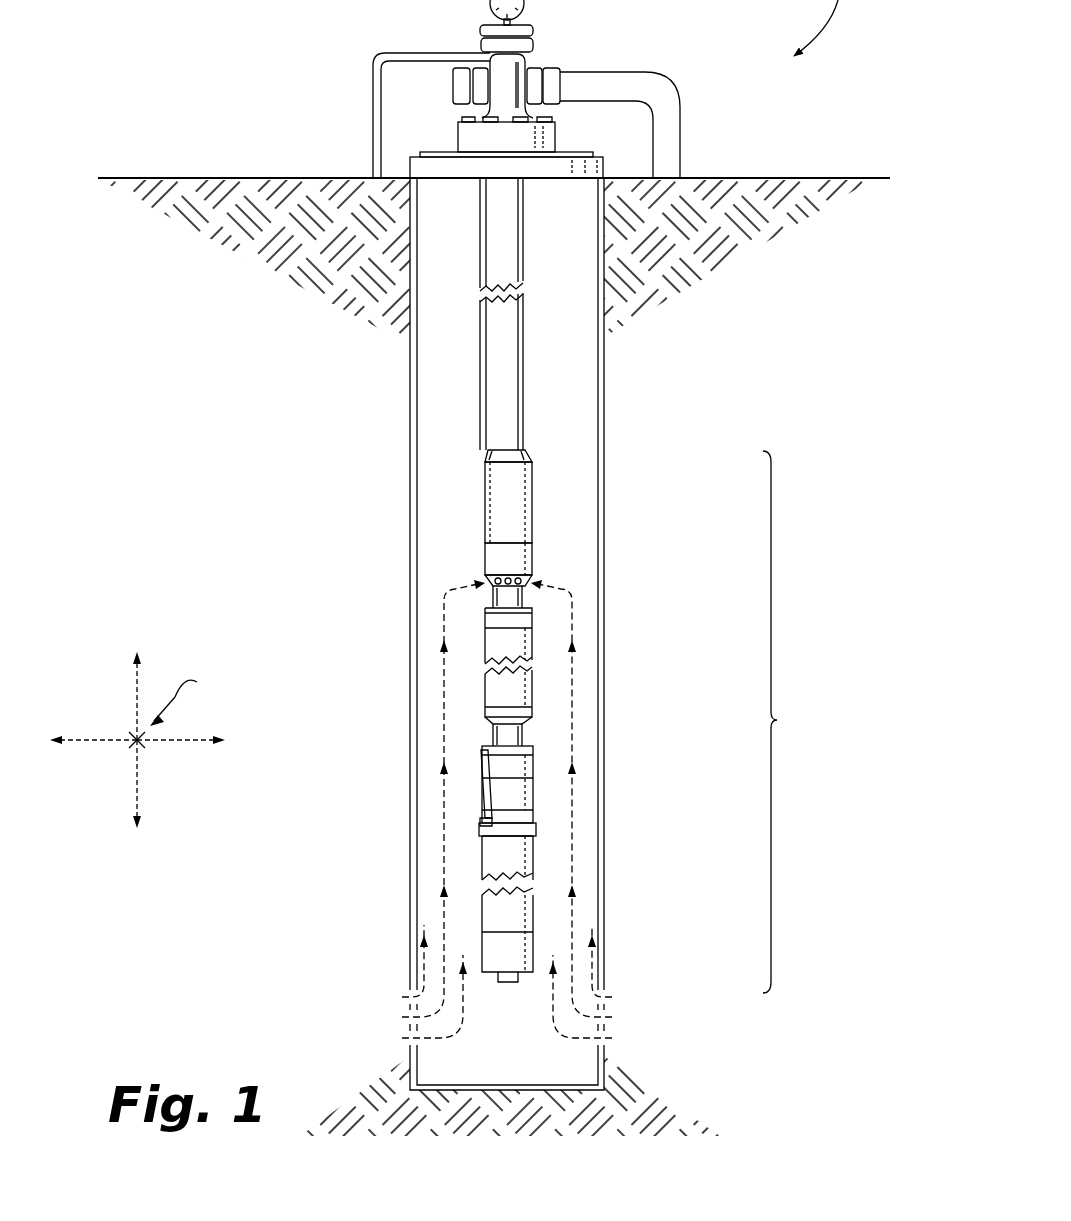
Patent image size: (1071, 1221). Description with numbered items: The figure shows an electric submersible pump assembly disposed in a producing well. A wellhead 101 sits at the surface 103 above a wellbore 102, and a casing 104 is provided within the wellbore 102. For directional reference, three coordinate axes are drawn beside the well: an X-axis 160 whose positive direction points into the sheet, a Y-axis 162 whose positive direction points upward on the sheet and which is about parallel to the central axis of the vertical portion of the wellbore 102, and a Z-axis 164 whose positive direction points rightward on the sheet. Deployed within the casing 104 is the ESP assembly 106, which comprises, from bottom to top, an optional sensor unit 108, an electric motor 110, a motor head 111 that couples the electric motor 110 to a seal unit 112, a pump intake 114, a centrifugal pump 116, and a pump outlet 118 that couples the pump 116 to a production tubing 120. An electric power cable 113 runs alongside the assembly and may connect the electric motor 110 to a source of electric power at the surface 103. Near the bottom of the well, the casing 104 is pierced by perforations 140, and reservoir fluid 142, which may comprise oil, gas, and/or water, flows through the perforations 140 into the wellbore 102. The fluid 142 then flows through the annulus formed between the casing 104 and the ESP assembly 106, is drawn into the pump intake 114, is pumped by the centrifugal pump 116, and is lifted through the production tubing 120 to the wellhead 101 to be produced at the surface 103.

The wellhead 101 is at (524, 8).
The wellbore 102 is at (558, 243).
The surface 103 is at (229, 178).
The casing 104 is at (605, 358).
The electric submersible pump (ESP) assembly 106 is at (786, 722).
The sensor unit 108 is at (505, 984).
The electric motor 110 is at (510, 864).
The motor head 111 is at (512, 790).
The seal unit 112 is at (512, 697).
The electric power cable 113 is at (484, 795).
The pump intake 114 is at (508, 557).
The centrifugal pump 116 is at (505, 502).
The pump outlet 118 is at (527, 450).
The production tubing 120 is at (523, 391).
The perforations 140 is at (601, 1017).
The reservoir fluid 142 is at (553, 1022).
The X-axis 160 is at (222, 668).
The Y-axis 162 is at (136, 600).
The Z-axis 164 is at (245, 776).